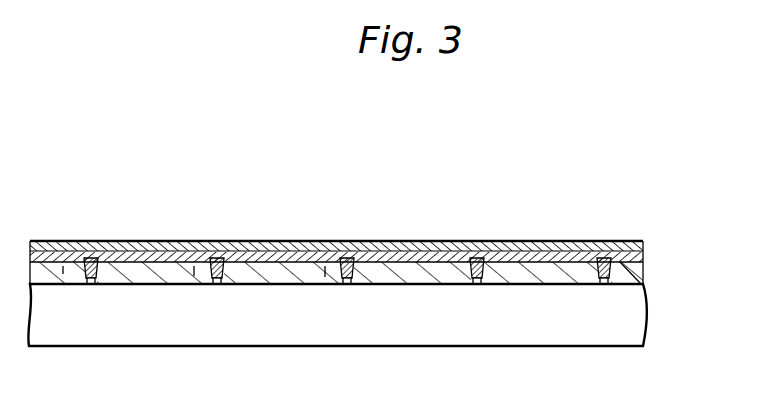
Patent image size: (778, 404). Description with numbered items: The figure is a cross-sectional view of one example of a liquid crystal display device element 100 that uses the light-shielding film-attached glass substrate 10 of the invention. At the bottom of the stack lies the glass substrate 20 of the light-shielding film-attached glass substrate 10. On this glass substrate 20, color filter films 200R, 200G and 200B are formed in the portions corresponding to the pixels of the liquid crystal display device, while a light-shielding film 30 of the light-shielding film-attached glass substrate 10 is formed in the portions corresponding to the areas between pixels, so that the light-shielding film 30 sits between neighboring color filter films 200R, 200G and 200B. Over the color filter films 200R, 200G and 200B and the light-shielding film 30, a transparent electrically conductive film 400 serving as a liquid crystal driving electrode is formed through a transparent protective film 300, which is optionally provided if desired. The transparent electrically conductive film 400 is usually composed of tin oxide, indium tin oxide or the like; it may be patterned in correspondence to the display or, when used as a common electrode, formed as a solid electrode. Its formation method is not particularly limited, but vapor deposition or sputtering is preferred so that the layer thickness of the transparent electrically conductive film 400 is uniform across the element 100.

The liquid crystal display device element 100 is at (636, 153).
The light-shielding film-attached glass substrate 10 is at (699, 272).
The glass substrate 20 is at (628, 316).
The light-shielding film 30 is at (602, 286).
The color filter film 200R is at (75, 241).
The color filter film 200G is at (203, 241).
The color filter film 200B is at (333, 241).
The transparent protective film 300 is at (608, 243).
The transparent electrically conductive film 400 is at (545, 243).